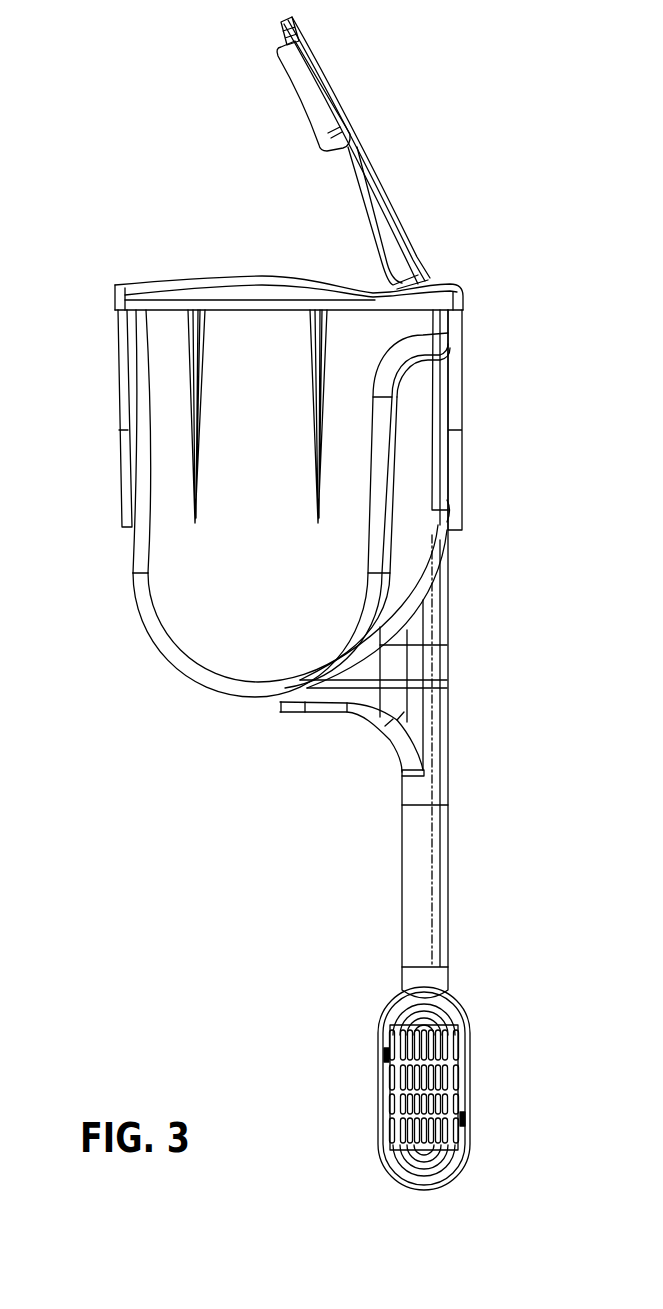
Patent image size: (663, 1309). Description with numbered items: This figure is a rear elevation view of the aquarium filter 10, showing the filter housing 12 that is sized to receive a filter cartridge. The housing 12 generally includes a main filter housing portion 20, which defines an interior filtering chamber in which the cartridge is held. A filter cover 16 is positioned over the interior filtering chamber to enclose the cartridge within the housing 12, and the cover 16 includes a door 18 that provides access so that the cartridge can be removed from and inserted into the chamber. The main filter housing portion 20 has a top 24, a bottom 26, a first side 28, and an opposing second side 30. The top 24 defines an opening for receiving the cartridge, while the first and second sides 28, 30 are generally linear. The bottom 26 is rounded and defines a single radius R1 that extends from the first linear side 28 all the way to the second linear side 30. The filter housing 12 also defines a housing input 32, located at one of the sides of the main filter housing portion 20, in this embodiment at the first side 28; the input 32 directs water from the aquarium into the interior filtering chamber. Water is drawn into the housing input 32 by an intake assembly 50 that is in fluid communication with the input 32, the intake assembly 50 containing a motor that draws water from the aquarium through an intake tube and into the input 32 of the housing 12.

The aquarium filter 10 is at (498, 106).
The filter housing 12 is at (130, 545).
The filter cover 16 is at (132, 283).
The door 18 is at (338, 87).
The main filter housing portion 20 is at (165, 427).
The top 24 is at (170, 308).
The bottom 26 is at (243, 697).
The first side 28 is at (393, 463).
The second side 30 is at (128, 458).
The housing input 32 is at (437, 413).
The intake assembly 50 is at (495, 698).
The single radius R1 is at (208, 668).